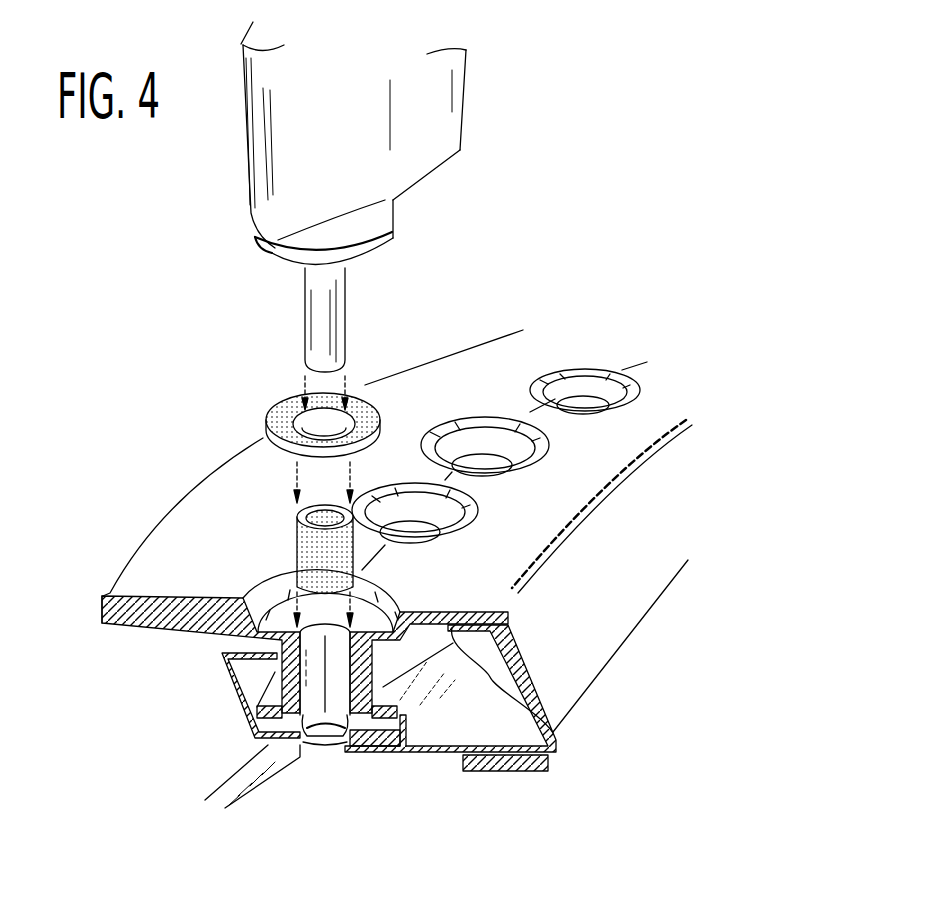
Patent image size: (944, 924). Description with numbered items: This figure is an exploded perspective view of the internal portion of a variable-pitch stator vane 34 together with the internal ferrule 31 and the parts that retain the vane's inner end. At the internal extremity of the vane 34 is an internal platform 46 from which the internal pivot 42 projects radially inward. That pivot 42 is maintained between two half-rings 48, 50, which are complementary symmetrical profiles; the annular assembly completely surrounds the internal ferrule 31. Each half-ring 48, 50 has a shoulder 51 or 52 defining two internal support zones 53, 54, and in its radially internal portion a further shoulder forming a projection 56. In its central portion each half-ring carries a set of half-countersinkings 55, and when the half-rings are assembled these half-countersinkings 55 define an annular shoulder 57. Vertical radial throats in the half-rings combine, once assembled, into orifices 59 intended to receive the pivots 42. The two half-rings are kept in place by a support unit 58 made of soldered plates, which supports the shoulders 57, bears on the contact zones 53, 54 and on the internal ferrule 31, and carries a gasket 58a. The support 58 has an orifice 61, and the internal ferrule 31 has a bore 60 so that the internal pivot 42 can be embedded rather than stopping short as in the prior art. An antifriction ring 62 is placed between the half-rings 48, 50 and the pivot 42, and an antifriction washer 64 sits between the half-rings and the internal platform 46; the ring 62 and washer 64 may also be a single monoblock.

The vane 34 is at (430, 80).
The internal platform 46 is at (397, 233).
The internal pivot 42 is at (319, 313).
The antifriction washer 64 is at (300, 402).
The antifriction ring 62 is at (325, 552).
The half-ring 48 is at (214, 465).
The half-countersinkings 55 is at (486, 440).
The orifices 59 is at (420, 527).
The annular shoulder 57 is at (250, 597).
The shoulder 52 is at (508, 616).
The shoulder 51 is at (103, 617).
The half-ring 50 is at (590, 508).
The projection 56 is at (397, 667).
The internal support zone 53 is at (222, 646).
The internal support zone 54 is at (535, 683).
The support unit 58 is at (523, 703).
The gasket 58a is at (490, 763).
The orifice 61 is at (338, 742).
The bore 60 is at (318, 748).
The internal ferrule 31 is at (223, 795).